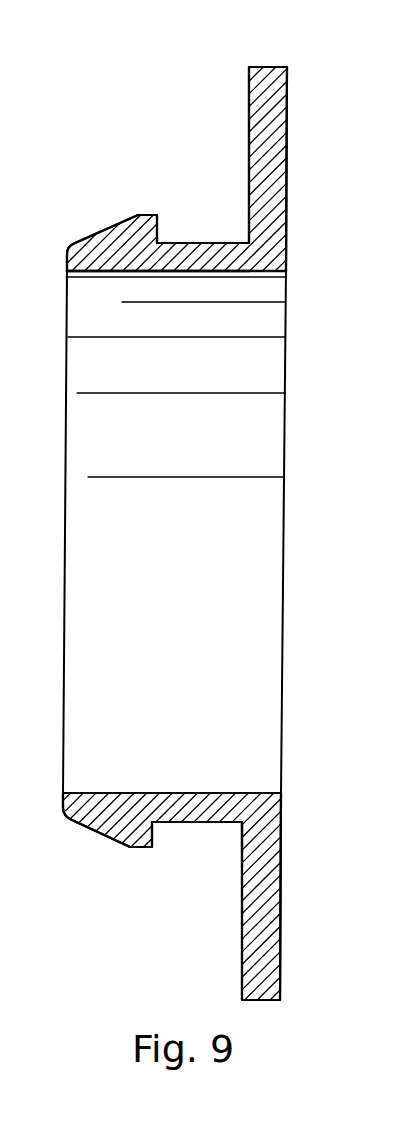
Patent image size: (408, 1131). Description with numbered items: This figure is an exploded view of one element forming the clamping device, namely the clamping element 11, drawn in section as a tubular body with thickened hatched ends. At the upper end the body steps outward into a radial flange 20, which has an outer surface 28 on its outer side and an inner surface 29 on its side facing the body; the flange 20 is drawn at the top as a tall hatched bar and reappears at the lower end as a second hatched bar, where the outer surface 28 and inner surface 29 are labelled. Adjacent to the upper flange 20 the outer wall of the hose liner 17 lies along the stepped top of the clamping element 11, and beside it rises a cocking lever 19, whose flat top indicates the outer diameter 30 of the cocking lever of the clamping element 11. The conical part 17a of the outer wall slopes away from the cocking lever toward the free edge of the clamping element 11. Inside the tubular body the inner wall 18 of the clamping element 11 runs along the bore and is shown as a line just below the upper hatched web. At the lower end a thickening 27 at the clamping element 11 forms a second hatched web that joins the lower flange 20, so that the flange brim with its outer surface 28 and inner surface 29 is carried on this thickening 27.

The clamping element 11 is at (144, 116).
The outer wall of the hose liner 17 is at (203, 238).
The conical part of the outer wall 17a is at (103, 226).
The inner wall 18 is at (132, 274).
The cocking lever 19 is at (159, 227).
The flange 20 is at (277, 156).
The thickening 27 is at (122, 803).
The outer surface of the flange 28 is at (281, 834).
The inner surface of the flange 29 is at (242, 836).
The outer diameter of the cocking lever 30 is at (147, 209).